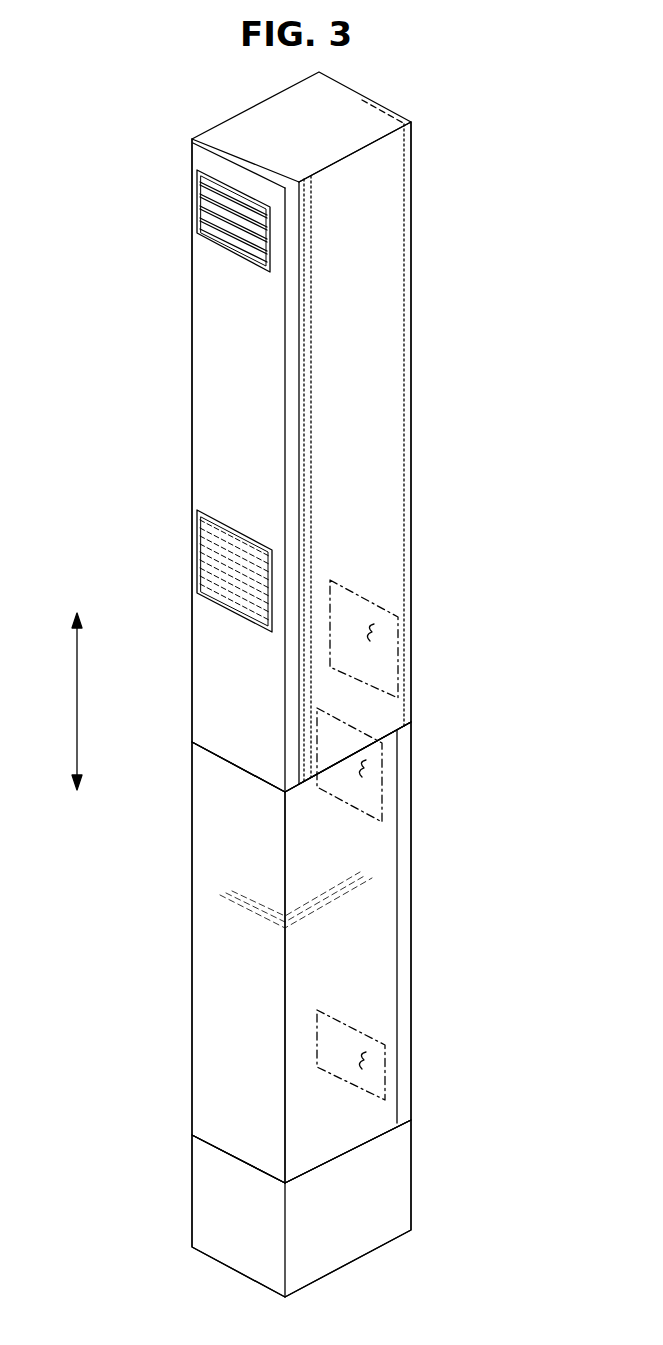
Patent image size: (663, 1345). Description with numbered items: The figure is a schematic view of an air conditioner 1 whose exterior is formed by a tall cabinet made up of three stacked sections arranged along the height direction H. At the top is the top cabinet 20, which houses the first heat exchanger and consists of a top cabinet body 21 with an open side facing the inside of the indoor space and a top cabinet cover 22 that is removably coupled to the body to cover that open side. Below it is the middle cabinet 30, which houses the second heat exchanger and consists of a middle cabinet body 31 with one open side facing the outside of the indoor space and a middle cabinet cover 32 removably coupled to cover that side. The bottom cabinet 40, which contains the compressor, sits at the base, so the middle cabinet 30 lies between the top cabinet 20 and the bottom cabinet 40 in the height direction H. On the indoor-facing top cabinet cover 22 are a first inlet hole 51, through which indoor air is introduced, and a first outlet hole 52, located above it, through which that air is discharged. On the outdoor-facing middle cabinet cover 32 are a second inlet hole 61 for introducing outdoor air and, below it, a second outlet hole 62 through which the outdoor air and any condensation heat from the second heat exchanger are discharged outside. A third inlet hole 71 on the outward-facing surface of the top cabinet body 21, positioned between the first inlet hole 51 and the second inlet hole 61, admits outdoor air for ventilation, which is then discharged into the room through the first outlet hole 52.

The air conditioner 1 is at (512, 113).
The top cabinet 20 is at (309, 446).
The top cabinet body 21 is at (388, 353).
The top cabinet cover 22 is at (220, 377).
The middle cabinet 30 is at (315, 945).
The middle cabinet body 31 is at (213, 990).
The middle cabinet cover 32 is at (405, 922).
The bottom cabinet 40 is at (388, 1202).
The first inlet hole 51 is at (235, 567).
The first outlet hole 52 is at (228, 225).
The second inlet hole 61 is at (363, 770).
The second outlet hole 62 is at (363, 1060).
The third inlet hole 71 is at (372, 634).
The height direction H is at (63, 701).